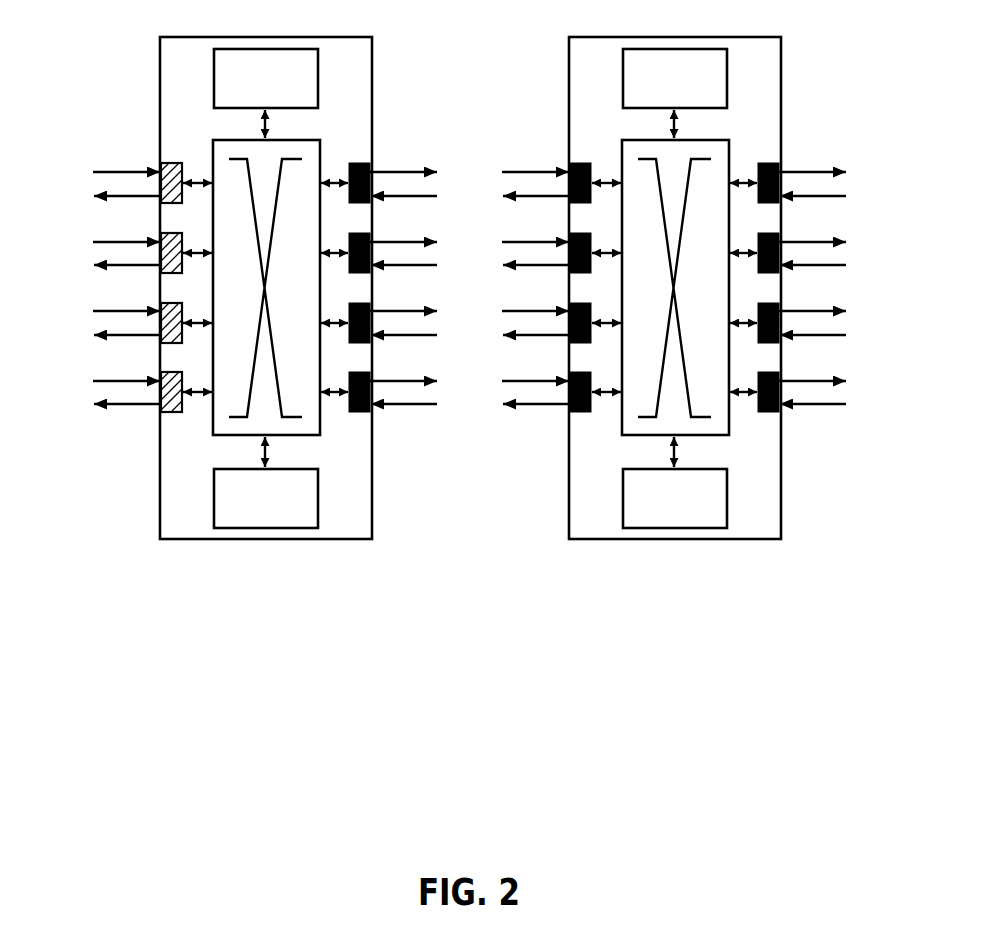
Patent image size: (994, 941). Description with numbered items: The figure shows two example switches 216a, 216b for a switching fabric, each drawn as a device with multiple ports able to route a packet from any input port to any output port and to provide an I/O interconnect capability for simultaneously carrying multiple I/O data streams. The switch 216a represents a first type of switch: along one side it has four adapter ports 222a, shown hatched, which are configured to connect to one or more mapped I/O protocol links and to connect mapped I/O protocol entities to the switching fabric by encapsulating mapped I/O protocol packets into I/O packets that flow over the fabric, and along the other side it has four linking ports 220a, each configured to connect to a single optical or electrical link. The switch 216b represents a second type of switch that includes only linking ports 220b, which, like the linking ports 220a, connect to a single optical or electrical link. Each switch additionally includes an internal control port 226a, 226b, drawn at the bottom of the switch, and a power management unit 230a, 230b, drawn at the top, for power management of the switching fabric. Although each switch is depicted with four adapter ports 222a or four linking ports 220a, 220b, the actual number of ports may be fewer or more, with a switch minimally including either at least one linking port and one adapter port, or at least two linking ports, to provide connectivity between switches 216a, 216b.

The switch 216a is at (160, 102).
The switch 216b is at (781, 100).
The linking ports 220a is at (370, 165).
The linking ports 220b is at (570, 162).
The adapter ports 222a is at (161, 163).
The internal control port 226a is at (313, 505).
The internal control port 226b is at (718, 504).
The power management unit 230a is at (310, 68).
The power management unit 230b is at (710, 67).